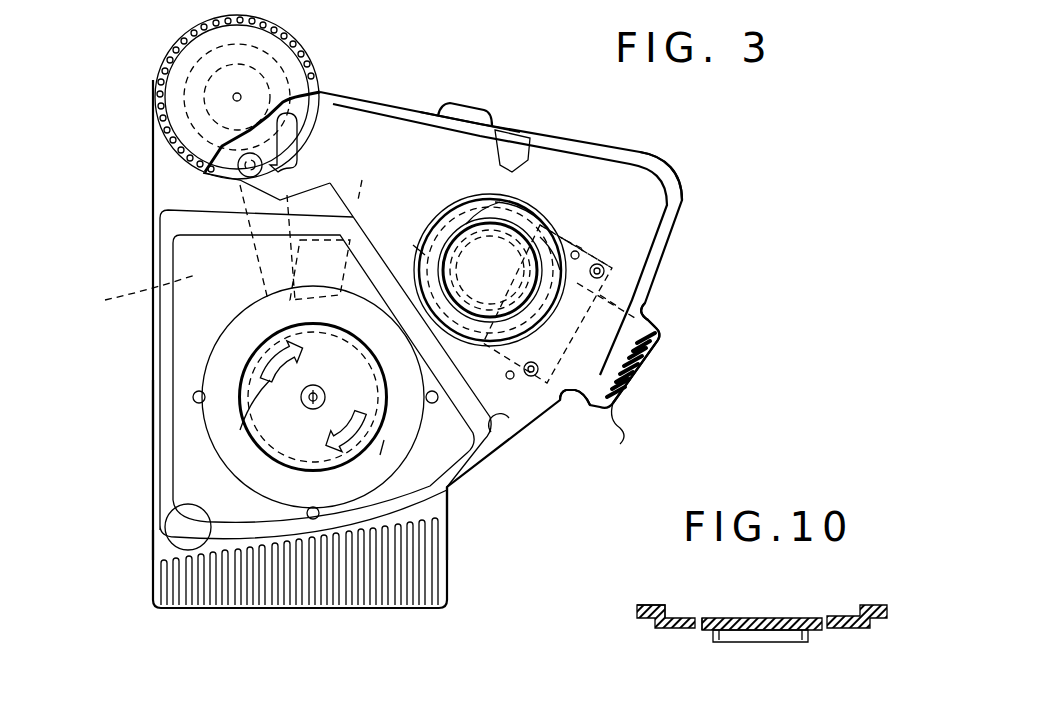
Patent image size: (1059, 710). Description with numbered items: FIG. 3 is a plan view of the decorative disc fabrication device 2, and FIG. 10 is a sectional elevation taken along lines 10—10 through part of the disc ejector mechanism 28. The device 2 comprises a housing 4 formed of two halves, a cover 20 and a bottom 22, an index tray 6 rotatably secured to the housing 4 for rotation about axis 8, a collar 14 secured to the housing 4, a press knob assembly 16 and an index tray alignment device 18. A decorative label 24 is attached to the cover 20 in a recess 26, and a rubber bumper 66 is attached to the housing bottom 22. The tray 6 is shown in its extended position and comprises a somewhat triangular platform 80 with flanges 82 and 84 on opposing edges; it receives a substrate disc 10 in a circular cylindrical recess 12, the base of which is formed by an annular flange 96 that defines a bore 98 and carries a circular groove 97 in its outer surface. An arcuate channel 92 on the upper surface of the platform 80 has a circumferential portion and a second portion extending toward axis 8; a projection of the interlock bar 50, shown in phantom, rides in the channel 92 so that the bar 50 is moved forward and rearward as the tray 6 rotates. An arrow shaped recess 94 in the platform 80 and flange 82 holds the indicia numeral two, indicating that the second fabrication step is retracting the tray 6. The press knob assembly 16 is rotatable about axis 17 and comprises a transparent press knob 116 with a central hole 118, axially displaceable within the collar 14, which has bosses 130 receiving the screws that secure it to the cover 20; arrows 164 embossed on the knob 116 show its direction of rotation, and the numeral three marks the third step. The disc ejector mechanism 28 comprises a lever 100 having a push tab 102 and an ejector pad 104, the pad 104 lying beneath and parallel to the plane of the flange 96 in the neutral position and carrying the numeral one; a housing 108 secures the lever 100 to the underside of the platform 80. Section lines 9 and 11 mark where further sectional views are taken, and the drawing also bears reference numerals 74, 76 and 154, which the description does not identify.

In FIG. 3, the decorative disc fabrication device 2 is at (452, 78).
In FIG. 3, the housing 4 is at (130, 198).
In FIG. 3, the index tray 6 is at (705, 172).
In FIG. 10, the index tray 6 is at (635, 615).
In FIG. 3, the axis 8 is at (237, 97).
In FIG. 3, the section line 9- 9 is at (440, 230).
In FIG. 3, the substrate disc 10 is at (545, 210).
In FIG. 3, the section line 11- 11 is at (610, 262).
In FIG. 3, the circular cylindrical recess 12 is at (280, 335).
In FIG. 3, the collar 14 is at (205, 330).
In FIG. 3, the press knob assembly 16 is at (250, 478).
In FIG. 3, the axis 17 is at (308, 408).
In FIG. 3, the index tray alignment device 18 is at (145, 538).
In FIG. 3, the cover 20 is at (158, 212).
In FIG. 3, the bottom 22 is at (129, 292).
In FIG. 3, the decorative label 24 is at (275, 45).
In FIG. 3, the recess 26 is at (308, 72).
In FIG. 3, the disc ejector mechanism 28 is at (672, 326).
In FIG. 10, the disc ejector mechanism 28 is at (745, 650).
In FIG. 3, the interlock bar 50 is at (250, 262).
In FIG. 3, the rubber bumper 66 is at (369, 179).
In FIG. 3, the boss 74 is at (512, 445).
In FIG. 3, the side wall 76 is at (153, 415).
In FIG. 3, the platform 80 is at (376, 124).
In FIG. 10, the platform 80 is at (675, 580).
In FIG. 3, the flange 82 is at (630, 148).
In FIG. 3, the flange 84 is at (452, 500).
In FIG. 3, the arcuate channel 92 is at (300, 160).
In FIG. 3, the arrow shaped recess 94 is at (505, 150).
In FIG. 3, the annular flange 96 is at (552, 228).
In FIG. 10, the annular flange 96 is at (688, 612).
In FIG. 3, the circular groove 97 is at (516, 220).
In FIG. 10, the circular groove 97 is at (860, 610).
In FIG. 3, the bore 98 is at (462, 224).
In FIG. 10, the bore 98 is at (700, 630).
In FIG. 3, the lever 100 is at (578, 405).
In FIG. 3, the push tab 102 is at (617, 438).
In FIG. 3, the ejector pad 104 is at (512, 282).
In FIG. 3, the housing 108 is at (640, 268).
In FIG. 3, the press knob 116 is at (240, 432).
In FIG. 3, the central hole 118 is at (302, 397).
In FIG. 3, the bosses 130 is at (194, 395).
In FIG. 3, the fins 154 is at (165, 540).
In FIG. 3, the arrows 164 is at (372, 461).